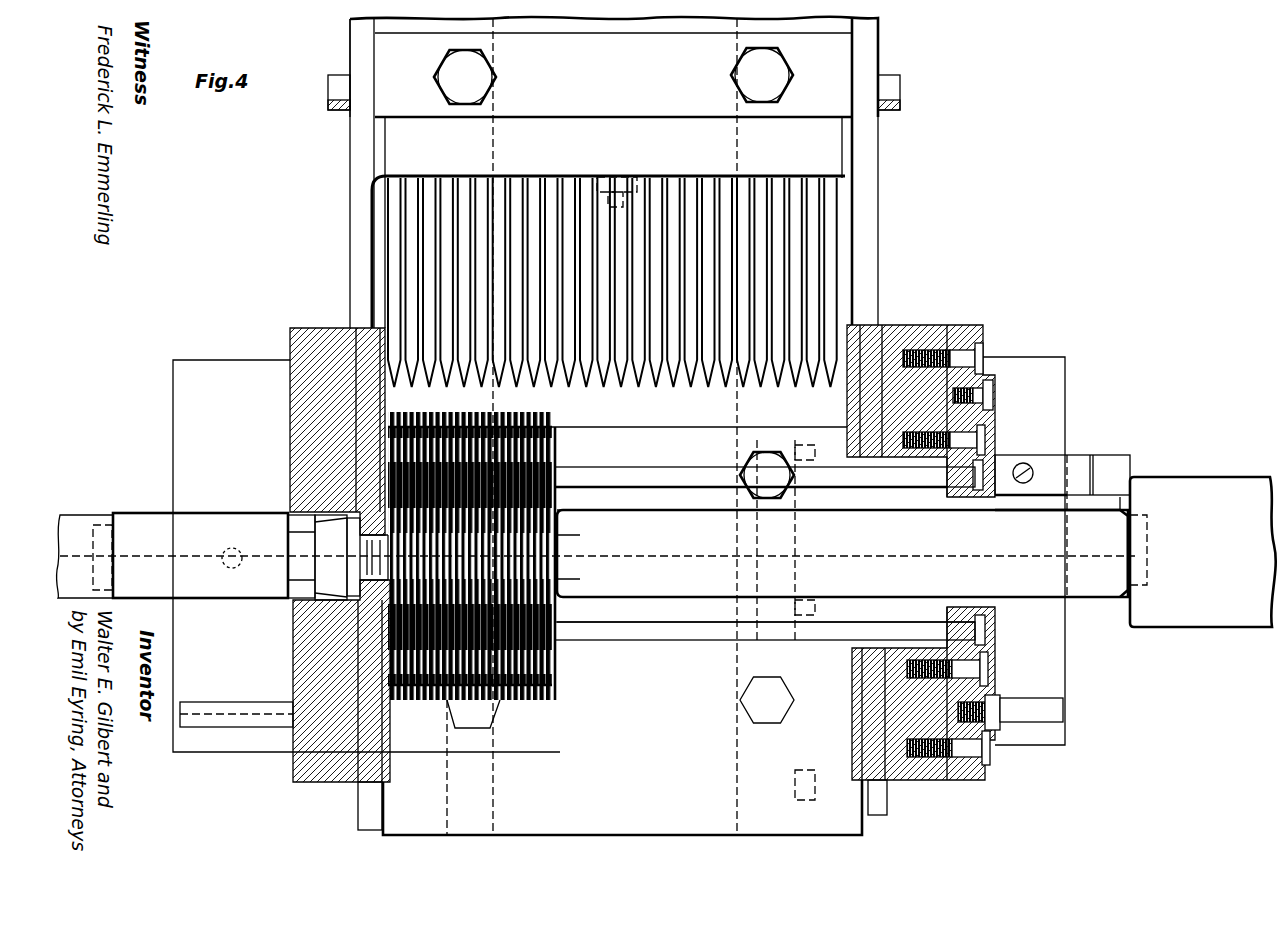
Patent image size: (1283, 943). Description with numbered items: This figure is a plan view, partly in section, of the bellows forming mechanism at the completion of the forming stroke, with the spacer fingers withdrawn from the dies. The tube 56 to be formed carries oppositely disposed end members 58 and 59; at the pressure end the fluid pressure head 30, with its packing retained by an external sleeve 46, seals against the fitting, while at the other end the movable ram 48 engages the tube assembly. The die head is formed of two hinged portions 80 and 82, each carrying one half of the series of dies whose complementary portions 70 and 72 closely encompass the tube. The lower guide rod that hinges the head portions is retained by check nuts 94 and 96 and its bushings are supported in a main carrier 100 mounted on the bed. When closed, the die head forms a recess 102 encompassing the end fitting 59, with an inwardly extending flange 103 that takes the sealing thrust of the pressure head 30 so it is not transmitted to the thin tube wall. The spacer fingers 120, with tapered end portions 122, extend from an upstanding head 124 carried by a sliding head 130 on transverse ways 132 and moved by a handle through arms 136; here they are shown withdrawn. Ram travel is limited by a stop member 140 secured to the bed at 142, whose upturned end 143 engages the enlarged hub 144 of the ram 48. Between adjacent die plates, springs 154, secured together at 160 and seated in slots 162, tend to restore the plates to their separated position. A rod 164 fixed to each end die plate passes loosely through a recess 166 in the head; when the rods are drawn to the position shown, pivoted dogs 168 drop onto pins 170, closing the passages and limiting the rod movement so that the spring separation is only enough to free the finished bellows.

The fluid pressure head 30 is at (193, 525).
The external sleeve 46 is at (303, 568).
The movable ram 48 is at (1088, 592).
The tube 56 is at (563, 553).
The end member 58 is at (560, 542).
The end member 59 is at (372, 545).
The die portion 70 is at (560, 512).
The die portion 72 is at (560, 602).
The die head portion 80 is at (300, 328).
The die head portion 82 is at (308, 770).
The check nut 94 is at (1113, 507).
The check nut 96 is at (132, 512).
The main carrier 100 is at (1045, 368).
The recess 102 is at (355, 597).
The inwardly extending flange 103 is at (383, 595).
The spacer fingers 120 is at (832, 246).
The tapered end portions 122 is at (820, 355).
The upstanding head 124 is at (575, 133).
The sliding head 130 is at (845, 25).
The transverse ways 132 is at (695, 20).
The arms 136 is at (873, 192).
The stop member 140 is at (1068, 445).
The securing point 142 is at (1025, 467).
The upturned end 143 is at (1123, 463).
The enlarged hub 144 is at (1192, 482).
The springs 154 is at (540, 708).
The spring securing point 160 is at (553, 432).
The slots 162 is at (550, 512).
The rod 164 is at (615, 475).
The recess 166 is at (983, 343).
The pivoted dogs 168 is at (990, 405).
The pins 170 is at (992, 448).